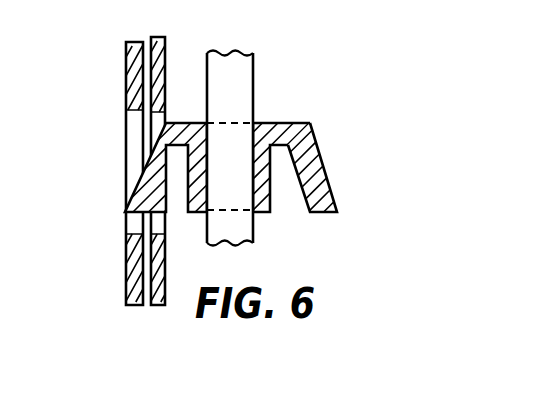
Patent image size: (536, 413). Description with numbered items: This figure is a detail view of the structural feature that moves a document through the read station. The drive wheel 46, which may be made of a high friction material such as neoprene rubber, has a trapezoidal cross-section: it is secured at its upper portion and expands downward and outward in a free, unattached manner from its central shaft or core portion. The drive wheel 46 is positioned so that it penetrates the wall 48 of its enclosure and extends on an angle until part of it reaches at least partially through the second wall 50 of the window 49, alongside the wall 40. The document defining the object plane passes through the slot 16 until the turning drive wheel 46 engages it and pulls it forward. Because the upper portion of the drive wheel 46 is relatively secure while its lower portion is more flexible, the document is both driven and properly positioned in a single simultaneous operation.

The slot 16 is at (109, 176).
The wall 40 is at (254, 68).
The drive wheel 46 is at (314, 157).
The wall 48 is at (150, 37).
The window 49 is at (225, 153).
The second wall 50 is at (125, 67).